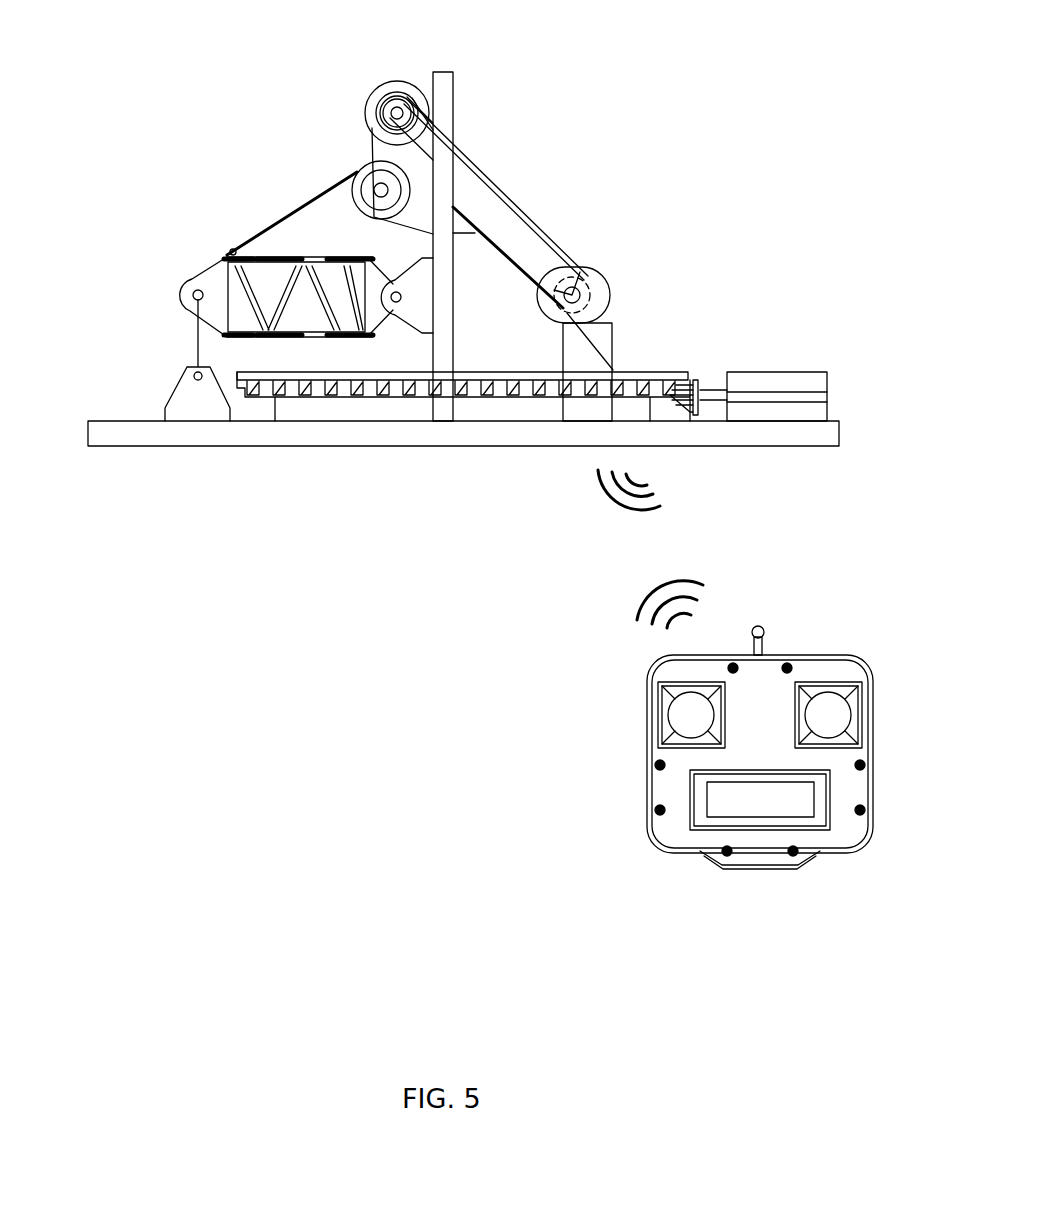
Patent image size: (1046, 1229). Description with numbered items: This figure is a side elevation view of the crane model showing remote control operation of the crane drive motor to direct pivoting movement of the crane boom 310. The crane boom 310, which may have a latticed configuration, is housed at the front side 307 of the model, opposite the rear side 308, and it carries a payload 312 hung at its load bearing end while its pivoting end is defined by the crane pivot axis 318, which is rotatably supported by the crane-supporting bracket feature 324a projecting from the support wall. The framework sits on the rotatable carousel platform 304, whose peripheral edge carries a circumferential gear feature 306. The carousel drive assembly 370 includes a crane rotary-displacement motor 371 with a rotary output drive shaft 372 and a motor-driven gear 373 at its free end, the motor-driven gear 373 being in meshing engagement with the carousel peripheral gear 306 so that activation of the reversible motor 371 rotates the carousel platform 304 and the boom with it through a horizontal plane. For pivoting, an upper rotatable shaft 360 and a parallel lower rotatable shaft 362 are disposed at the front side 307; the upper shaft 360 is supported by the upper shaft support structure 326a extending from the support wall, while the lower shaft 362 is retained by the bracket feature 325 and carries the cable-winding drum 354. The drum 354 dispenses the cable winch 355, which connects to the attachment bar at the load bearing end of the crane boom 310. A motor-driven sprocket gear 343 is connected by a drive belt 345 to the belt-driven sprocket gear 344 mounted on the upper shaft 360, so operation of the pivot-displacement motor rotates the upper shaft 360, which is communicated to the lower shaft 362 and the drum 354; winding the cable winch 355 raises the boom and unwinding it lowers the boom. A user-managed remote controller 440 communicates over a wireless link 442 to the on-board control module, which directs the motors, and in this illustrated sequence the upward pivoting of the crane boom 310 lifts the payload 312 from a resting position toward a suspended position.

The carousel platform 304 is at (478, 400).
The circumferential gear feature 306 is at (565, 378).
The front side 307 is at (213, 160).
The rear side 308 is at (705, 145).
The crane boom 310 is at (148, 290).
The payload 312 is at (150, 400).
The crane pivot axis 318 is at (390, 305).
The crane-supporting bracket feature 324a is at (417, 318).
The bracket feature 325 is at (440, 163).
The upper shaft support structure 326a is at (437, 166).
The motor-driven sprocket gear 343 is at (583, 292).
The belt-driven sprocket gear 344 is at (408, 88).
The drive belt 345 is at (545, 205).
The cable-winding drum 354 is at (350, 203).
The cable winch 355 is at (232, 243).
The upper rotatable shaft 360 is at (385, 105).
The lower rotatable shaft 362 is at (363, 175).
The carousel drive assembly 370 is at (805, 335).
The crane rotary-displacement motor 371 is at (815, 383).
The rotary output drive shaft 372 is at (700, 392).
The motor-driven gear 373 is at (700, 418).
The remote controller 440 is at (850, 645).
The wireless link 442 is at (688, 535).